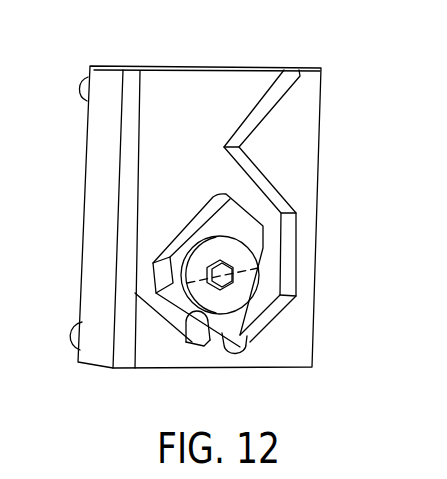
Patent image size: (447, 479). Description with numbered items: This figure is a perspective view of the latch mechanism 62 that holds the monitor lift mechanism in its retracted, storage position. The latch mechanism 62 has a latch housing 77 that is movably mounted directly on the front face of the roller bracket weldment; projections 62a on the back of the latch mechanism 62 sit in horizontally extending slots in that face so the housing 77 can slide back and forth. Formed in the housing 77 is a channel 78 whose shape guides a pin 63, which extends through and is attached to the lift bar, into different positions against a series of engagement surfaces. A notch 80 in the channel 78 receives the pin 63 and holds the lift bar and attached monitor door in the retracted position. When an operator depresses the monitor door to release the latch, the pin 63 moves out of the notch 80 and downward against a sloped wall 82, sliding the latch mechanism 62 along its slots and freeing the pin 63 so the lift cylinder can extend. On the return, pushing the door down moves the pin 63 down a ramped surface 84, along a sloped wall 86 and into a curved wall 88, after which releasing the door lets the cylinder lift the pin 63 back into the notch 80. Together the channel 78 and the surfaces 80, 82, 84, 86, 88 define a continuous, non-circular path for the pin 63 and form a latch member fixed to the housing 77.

The latch mechanism 62 is at (337, 153).
The projections 62a is at (81, 97).
The pin 63 is at (238, 293).
The latch housing 77 is at (297, 190).
The channel 78 is at (233, 180).
The notch 80 is at (218, 262).
The sloped wall 82 is at (220, 329).
The ramped surface 84 is at (185, 237).
The sloped wall 86 is at (153, 320).
The curved wall 88 is at (187, 343).